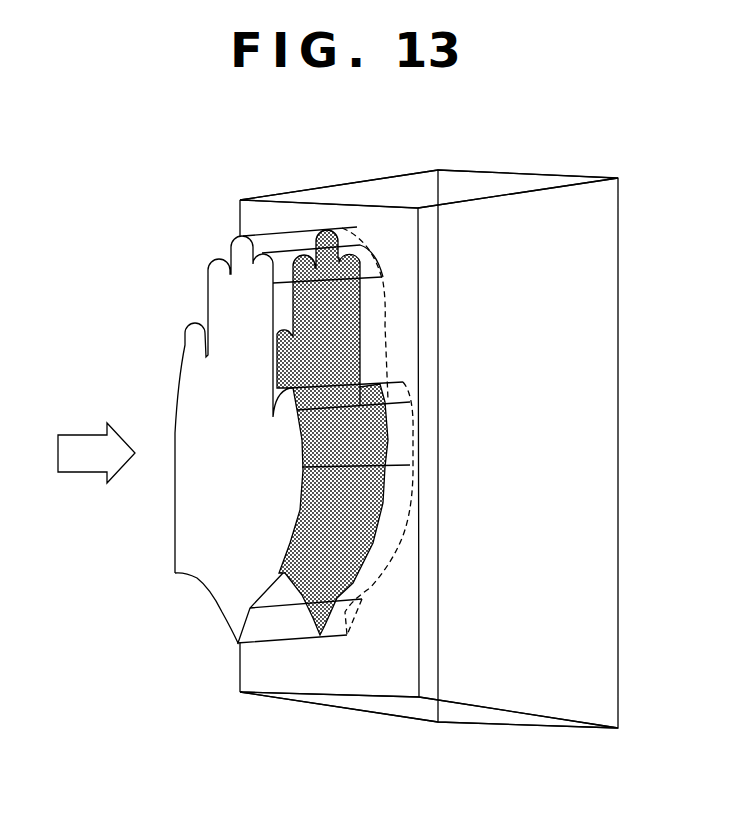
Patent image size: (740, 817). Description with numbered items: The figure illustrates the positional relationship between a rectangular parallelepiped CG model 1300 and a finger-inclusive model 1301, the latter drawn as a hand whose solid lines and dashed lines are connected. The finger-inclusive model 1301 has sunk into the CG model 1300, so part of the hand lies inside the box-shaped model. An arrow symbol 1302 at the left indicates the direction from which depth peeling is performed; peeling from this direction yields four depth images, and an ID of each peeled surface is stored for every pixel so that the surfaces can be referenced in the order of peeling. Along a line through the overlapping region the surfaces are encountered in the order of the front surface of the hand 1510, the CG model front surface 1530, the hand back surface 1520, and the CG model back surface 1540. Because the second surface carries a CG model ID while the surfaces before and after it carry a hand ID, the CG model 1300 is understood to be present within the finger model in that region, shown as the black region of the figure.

The CG model 1300 is at (563, 144).
The finger-inclusive model 1301 is at (191, 244).
The arrow symbol 1302 is at (80, 475).
The front surface of the hand 1510 is at (177, 576).
The hand back surface 1520 is at (364, 600).
The CG model front surface 1530 is at (260, 676).
The CG model back surface 1540 is at (478, 172).